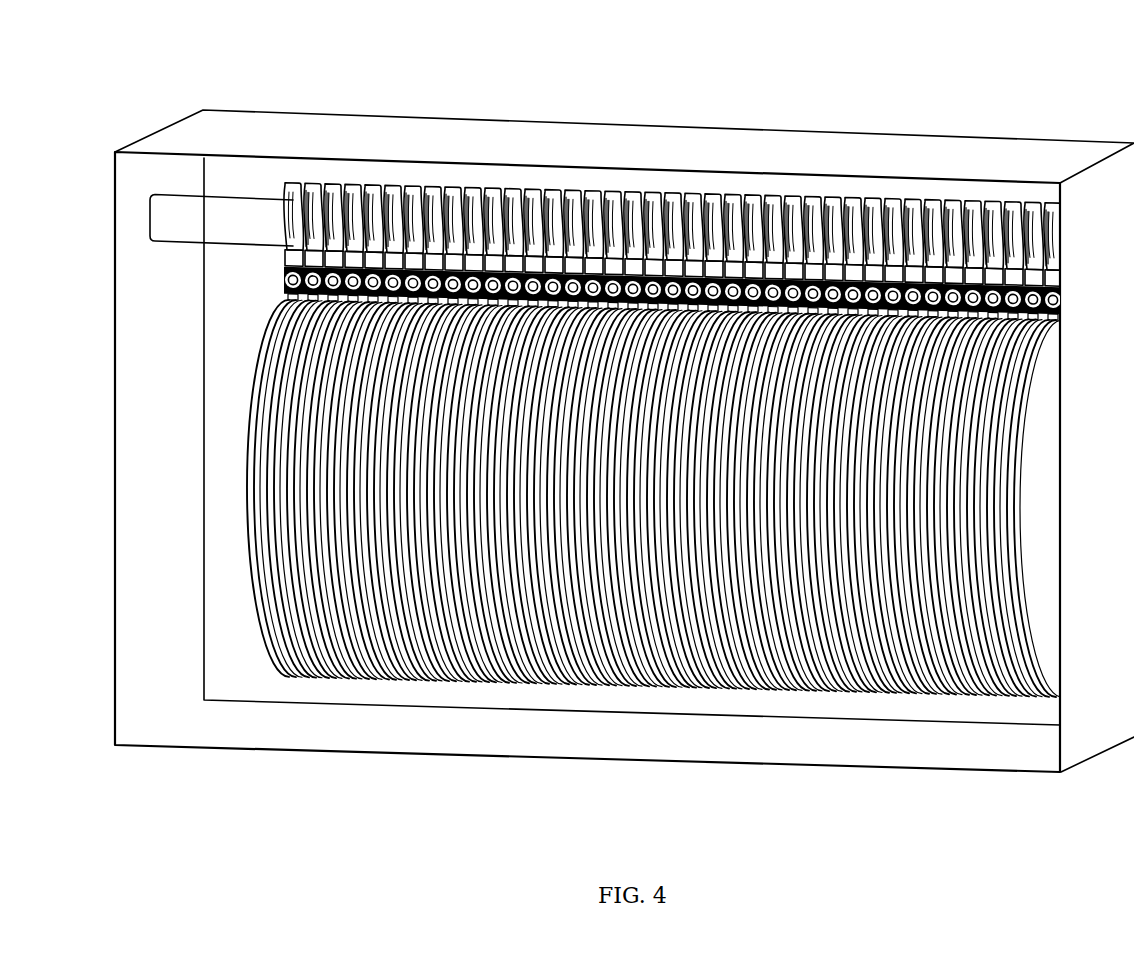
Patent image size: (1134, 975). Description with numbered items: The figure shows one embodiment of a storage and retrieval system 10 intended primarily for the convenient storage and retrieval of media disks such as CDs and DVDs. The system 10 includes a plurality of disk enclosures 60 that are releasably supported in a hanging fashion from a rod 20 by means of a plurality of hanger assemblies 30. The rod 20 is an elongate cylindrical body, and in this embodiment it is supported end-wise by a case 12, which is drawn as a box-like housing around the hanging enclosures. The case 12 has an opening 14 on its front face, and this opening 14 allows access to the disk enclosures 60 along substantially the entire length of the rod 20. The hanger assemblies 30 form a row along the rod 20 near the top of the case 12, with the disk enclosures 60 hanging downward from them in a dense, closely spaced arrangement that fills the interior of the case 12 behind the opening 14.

The storage and retrieval system 10 is at (509, 84).
The case 12 is at (297, 128).
The opening 14 is at (231, 344).
The rod 20 is at (273, 232).
The hanger assemblies 30 is at (303, 190).
The disk enclosures 60 is at (270, 633).